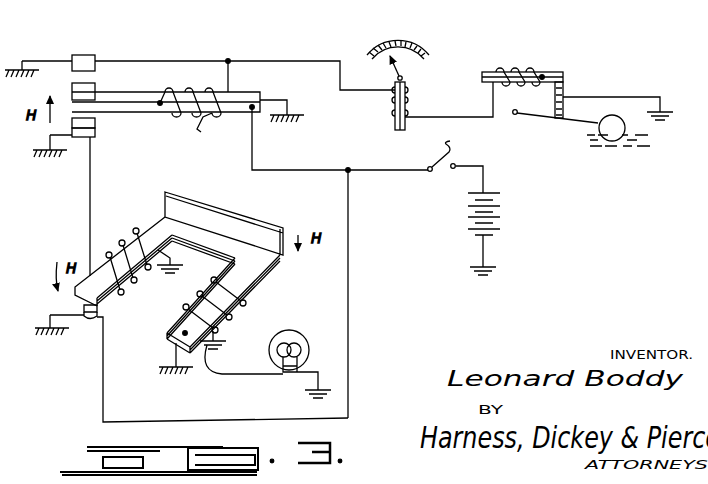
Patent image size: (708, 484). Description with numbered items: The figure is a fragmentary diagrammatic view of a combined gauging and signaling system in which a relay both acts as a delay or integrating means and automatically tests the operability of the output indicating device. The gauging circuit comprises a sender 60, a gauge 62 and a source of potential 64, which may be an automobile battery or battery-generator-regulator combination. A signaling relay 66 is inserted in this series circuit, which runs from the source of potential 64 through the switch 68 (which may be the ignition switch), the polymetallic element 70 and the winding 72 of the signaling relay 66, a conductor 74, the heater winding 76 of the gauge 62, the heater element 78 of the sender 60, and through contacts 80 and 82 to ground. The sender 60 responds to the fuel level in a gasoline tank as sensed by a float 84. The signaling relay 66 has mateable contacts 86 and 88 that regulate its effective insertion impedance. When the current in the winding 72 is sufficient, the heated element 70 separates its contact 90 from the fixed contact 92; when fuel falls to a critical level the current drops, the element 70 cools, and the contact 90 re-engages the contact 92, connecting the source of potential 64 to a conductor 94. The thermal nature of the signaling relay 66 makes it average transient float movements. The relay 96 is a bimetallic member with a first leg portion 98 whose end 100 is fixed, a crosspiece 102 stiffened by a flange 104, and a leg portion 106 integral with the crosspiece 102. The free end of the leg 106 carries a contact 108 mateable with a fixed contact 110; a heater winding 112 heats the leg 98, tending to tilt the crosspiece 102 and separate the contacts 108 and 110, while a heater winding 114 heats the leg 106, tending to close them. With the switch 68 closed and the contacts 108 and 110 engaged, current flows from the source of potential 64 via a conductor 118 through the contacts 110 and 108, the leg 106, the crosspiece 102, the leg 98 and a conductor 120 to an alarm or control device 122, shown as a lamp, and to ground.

The sender 60 is at (544, 74).
The gauge 62 is at (415, 74).
The source of potential 64 is at (500, 207).
The signaling relay 66 is at (198, 105).
The switch 68 is at (444, 158).
The polymetallic element 70 is at (261, 93).
The winding 72 is at (205, 121).
The conductor 74 is at (339, 59).
The heater winding 76 is at (408, 91).
The heater element 78 is at (497, 72).
The contact 80 is at (565, 83).
The contact 82 is at (553, 101).
The float 84 is at (617, 118).
The contact 86 is at (96, 84).
The contact 88 is at (90, 56).
The contact 90 is at (96, 123).
The contact 92 is at (97, 134).
The conductor 94 is at (89, 179).
The relay 96 is at (196, 260).
The first leg portion 98 is at (248, 273).
The end 100 is at (168, 340).
The crosspiece 102 is at (217, 248).
The flange 104 is at (190, 216).
The leg portion 106 is at (155, 233).
The electrical contact 108 is at (80, 303).
The contact 110 is at (91, 322).
The heater winding 112 is at (230, 318).
The heater winding 114 is at (108, 252).
The conductor 118 is at (349, 258).
The conductor 120 is at (224, 342).
The alarm or control device 122 is at (304, 334).